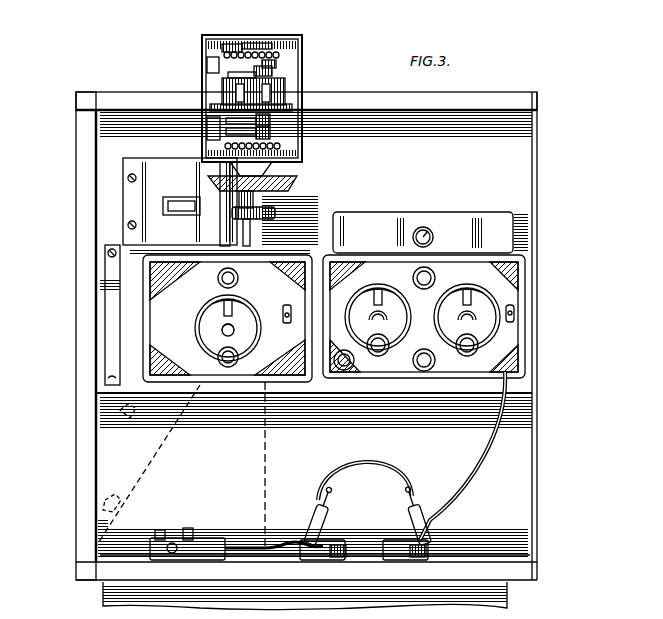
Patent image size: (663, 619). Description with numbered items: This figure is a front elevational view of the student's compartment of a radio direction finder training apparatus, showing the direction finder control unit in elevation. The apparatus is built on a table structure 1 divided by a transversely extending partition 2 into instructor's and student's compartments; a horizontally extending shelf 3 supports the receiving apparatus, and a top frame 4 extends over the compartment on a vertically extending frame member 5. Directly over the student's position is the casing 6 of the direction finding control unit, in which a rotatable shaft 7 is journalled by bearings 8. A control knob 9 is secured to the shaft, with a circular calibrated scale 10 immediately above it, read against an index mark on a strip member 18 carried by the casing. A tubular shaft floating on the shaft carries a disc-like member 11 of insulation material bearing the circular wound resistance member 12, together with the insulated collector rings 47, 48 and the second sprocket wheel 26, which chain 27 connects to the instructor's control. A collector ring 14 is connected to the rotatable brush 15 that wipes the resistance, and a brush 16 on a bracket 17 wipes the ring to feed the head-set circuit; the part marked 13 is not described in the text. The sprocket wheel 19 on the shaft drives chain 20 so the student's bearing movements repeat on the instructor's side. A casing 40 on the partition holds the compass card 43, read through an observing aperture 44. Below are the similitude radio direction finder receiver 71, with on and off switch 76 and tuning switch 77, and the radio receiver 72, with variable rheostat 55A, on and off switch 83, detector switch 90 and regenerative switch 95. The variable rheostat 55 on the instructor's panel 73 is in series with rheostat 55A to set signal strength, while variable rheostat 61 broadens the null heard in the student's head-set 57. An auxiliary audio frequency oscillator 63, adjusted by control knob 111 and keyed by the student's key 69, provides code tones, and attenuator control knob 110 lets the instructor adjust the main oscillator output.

The table structure 1 is at (76, 576).
The partition 2 is at (525, 168).
The shelf 3 is at (268, 390).
The top frame 4 is at (520, 96).
The frame member 5 is at (76, 160).
The casing 6 is at (205, 126).
The rotatable shaft 7 is at (240, 200).
The bearings 8 is at (207, 150).
The control knob 9 is at (276, 216).
The calibrated scale 10 is at (272, 212).
The disc-like member 11 is at (293, 107).
The circular wound resistance member 12 is at (222, 80).
The top bar 13 is at (262, 43).
The collector ring 14 is at (272, 70).
The rotatable brush 15 is at (272, 78).
The brush 16 is at (222, 48).
The bracket 17 is at (214, 62).
The strip member 18 is at (292, 181).
The sprocket wheel 19 is at (278, 50).
The chain 20 is at (278, 57).
The second sprocket wheel 26 is at (270, 138).
The chain 27 is at (266, 150).
The casing 40 is at (158, 162).
The compass card 43 is at (165, 211).
The observing aperture 44 is at (165, 203).
The collector ring 47 is at (272, 119).
The collector ring 48 is at (268, 128).
The variable rheostat 55 is at (100, 518).
The variable rheostat 55A is at (350, 392).
The student's head-set 57 is at (422, 482).
The variable rheostat 61 is at (38, 518).
The auxiliary audio frequency oscillator 63 is at (478, 216).
The student's key 69 is at (176, 537).
The radio direction finder receiver 71 is at (143, 330).
The radio receiver 72 is at (525, 356).
The instructor's panel 73 is at (135, 464).
The on and off switch 76 is at (287, 305).
The switch 77 is at (205, 306).
The on and off switch 83 is at (516, 312).
The adjustable switch 90 is at (352, 300).
The switch 95 is at (456, 302).
The attenuator control knob 110 is at (100, 498).
The control knob 111 is at (416, 228).